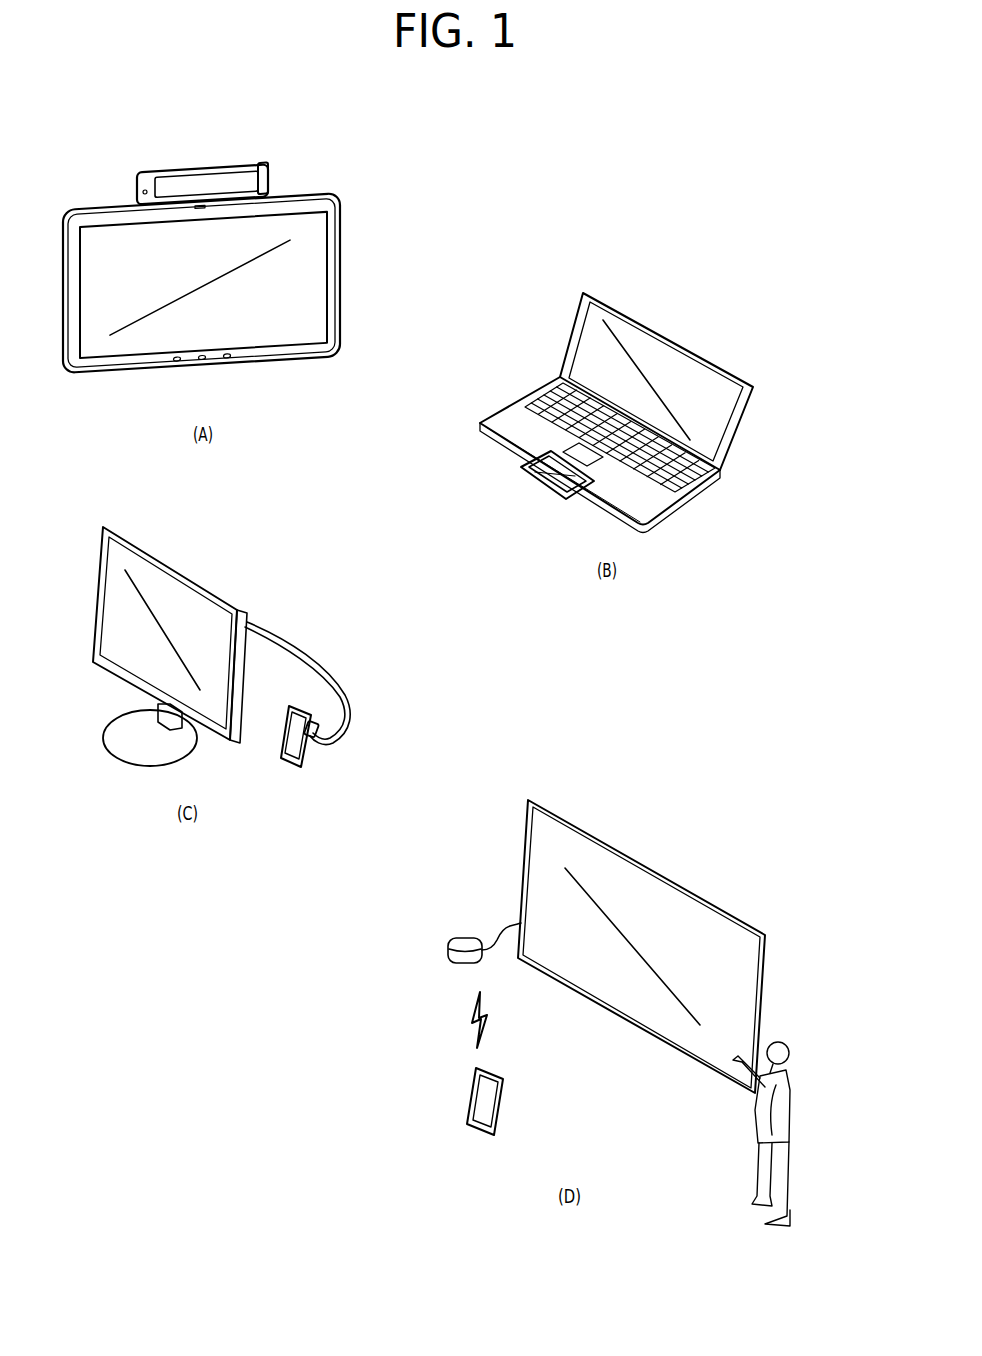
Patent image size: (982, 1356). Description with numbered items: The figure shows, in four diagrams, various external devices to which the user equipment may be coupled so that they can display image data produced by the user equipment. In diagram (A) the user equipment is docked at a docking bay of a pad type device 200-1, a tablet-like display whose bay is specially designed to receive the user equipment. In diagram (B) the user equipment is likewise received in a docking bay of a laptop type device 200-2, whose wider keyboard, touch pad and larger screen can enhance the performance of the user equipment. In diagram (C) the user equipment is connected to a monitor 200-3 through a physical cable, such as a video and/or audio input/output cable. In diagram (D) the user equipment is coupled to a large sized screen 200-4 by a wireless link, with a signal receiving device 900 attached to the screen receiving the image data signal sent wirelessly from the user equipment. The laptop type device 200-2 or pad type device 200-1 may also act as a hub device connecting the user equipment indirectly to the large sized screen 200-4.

The pad type device 200-1 is at (340, 223).
The laptop type device 200-2 is at (722, 470).
The monitor 200-3 is at (240, 617).
The large sized screen 200-4 is at (680, 880).
The signal receiving device 900 is at (455, 939).